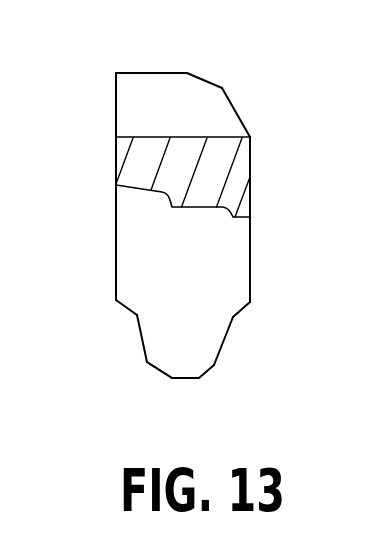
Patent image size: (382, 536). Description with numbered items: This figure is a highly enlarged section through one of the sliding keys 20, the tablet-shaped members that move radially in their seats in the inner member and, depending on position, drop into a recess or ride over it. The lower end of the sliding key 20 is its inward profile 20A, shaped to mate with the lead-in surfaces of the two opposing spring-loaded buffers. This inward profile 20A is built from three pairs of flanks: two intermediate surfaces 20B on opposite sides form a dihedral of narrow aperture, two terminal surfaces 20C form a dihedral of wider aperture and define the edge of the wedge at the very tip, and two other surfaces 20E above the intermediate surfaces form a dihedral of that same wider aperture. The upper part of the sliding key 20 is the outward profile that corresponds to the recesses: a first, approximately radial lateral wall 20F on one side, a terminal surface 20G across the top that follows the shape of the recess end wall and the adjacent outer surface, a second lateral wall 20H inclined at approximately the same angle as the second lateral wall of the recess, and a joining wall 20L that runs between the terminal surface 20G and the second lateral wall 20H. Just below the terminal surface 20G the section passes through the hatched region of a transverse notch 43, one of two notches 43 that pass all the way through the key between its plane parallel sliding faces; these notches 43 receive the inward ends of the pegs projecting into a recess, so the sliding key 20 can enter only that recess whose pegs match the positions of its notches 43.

The sliding key 20 is at (230, 257).
The inward profile 20A is at (143, 377).
The intermediate surfaces 20B is at (229, 343).
The terminal surfaces 20C is at (207, 373).
The other surfaces 20E is at (240, 308).
The first lateral wall 20F is at (115, 118).
The terminal surface 20G is at (165, 72).
The second lateral wall 20H is at (243, 117).
The joining wall 20L is at (208, 80).
The transverse notches 43 is at (178, 137).